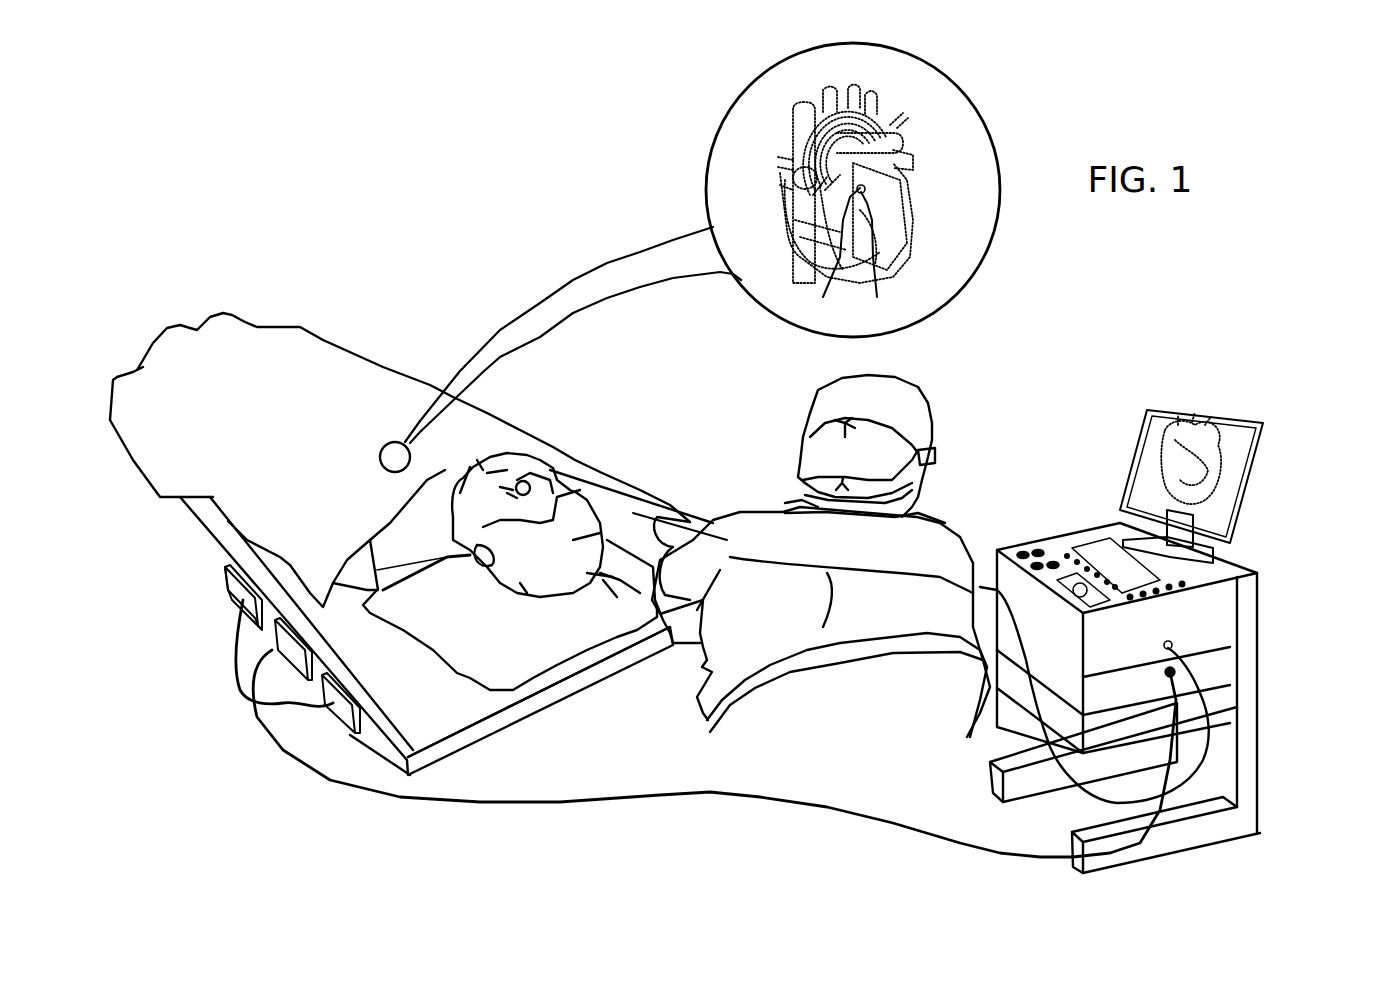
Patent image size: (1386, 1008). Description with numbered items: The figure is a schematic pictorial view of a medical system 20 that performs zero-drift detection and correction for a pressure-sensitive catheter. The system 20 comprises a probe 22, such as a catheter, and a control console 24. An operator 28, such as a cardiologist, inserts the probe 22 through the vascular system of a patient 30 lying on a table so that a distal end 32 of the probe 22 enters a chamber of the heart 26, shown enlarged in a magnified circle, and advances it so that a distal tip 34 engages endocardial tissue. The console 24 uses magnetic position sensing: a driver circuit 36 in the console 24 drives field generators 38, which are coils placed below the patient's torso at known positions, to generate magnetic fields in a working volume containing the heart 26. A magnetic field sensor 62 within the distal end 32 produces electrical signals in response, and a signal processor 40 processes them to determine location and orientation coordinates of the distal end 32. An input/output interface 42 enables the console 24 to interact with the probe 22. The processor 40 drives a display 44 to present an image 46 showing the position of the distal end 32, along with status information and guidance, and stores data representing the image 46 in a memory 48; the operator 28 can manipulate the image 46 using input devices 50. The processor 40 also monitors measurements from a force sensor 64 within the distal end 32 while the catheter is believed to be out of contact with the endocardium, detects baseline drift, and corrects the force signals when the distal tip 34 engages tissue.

The medical system 20 is at (1070, 343).
The probe 22 is at (620, 491).
The control console 24 is at (1275, 559).
The heart 26 is at (900, 247).
The operator 28 is at (733, 515).
The patient 30 is at (520, 588).
The distal end 32 is at (902, 117).
The distal tip 34 is at (865, 189).
The driver circuit 36 is at (1223, 600).
The field generators 38 is at (342, 720).
The signal processor 40 is at (1230, 667).
The input/output interface 42 is at (1164, 646).
The display 44 is at (1260, 445).
The image 46 is at (1163, 450).
The memory 48 is at (1227, 707).
The input devices 50 is at (1055, 552).
The magnetic field sensor 62 is at (833, 255).
The force sensor 64 is at (875, 257).